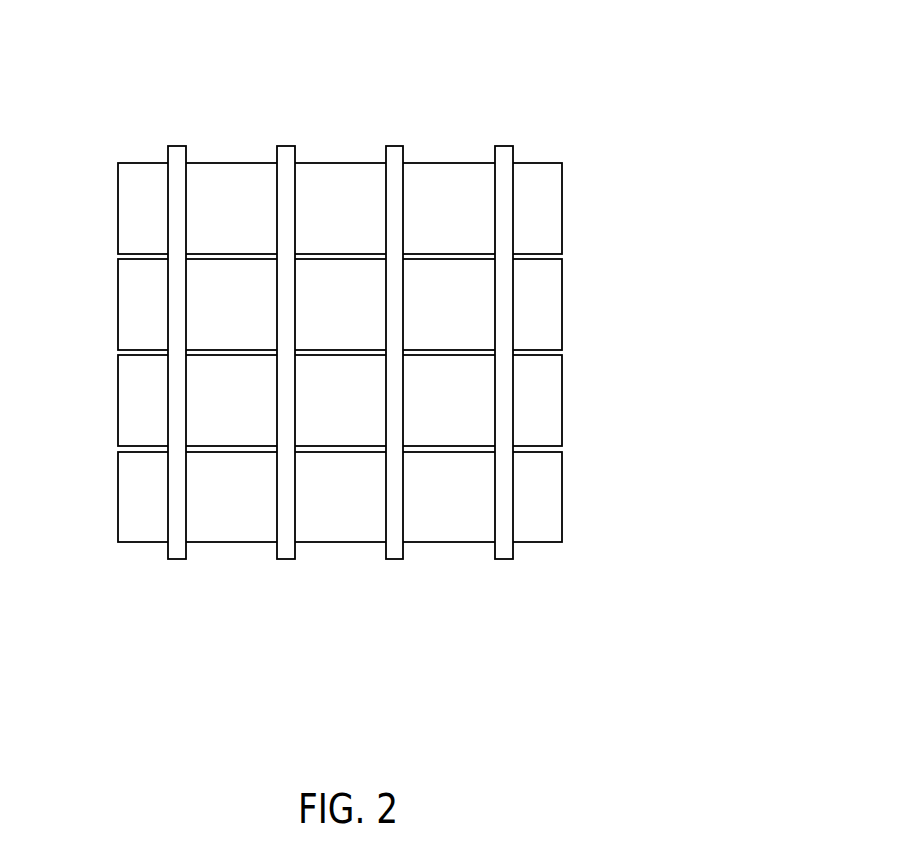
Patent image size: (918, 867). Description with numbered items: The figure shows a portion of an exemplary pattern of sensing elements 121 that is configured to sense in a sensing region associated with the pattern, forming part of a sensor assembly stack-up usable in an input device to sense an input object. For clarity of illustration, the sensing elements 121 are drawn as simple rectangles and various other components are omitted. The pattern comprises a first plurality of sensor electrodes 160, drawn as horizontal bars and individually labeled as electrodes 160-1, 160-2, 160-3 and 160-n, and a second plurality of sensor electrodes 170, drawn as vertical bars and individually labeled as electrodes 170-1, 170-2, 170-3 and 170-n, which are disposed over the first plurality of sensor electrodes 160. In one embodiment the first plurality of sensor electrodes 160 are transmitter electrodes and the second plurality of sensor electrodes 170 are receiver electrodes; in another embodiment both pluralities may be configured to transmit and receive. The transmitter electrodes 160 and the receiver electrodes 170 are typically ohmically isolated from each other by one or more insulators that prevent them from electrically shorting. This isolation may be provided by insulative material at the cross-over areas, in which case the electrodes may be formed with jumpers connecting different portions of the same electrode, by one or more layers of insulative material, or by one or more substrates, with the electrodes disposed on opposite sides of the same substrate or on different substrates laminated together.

The sensing elements 121 is at (462, 55).
The first plurality of sensor electrodes 160 is at (93, 160).
The transmitter electrode 160-1 is at (562, 207).
The transmitter electrode 160-2 is at (562, 303).
The transmitter electrode 160-3 is at (562, 399).
The transmitter electrode 160-n is at (562, 495).
The second plurality of sensor electrodes 170 is at (528, 133).
The receiver electrode 170-1 is at (177, 559).
The receiver electrode 170-2 is at (286, 559).
The receiver electrode 170-3 is at (394, 559).
The receiver electrode 170-n is at (504, 559).